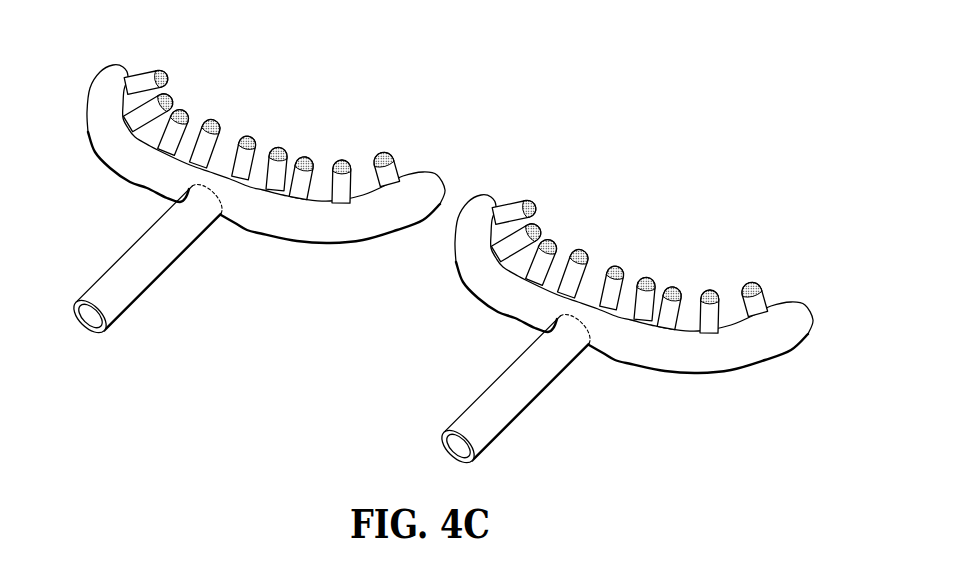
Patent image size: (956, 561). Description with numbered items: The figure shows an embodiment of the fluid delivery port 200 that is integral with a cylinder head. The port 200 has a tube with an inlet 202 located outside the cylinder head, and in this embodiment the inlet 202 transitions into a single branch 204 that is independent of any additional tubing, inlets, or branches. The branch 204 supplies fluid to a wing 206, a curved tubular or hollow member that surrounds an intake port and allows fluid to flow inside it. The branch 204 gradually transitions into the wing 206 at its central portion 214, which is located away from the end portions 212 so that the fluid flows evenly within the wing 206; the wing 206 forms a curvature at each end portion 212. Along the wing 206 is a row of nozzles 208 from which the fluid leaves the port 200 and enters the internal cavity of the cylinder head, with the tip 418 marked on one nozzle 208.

The fluid delivery port 200 is at (294, 94).
The inlet 202 is at (457, 449).
The branch 204 is at (482, 397).
The wing 206 is at (590, 329).
The nozzle 208 is at (563, 172).
The end portion 212 is at (456, 265).
The central portion 214 is at (632, 362).
The tip of post 418 is at (536, 212).